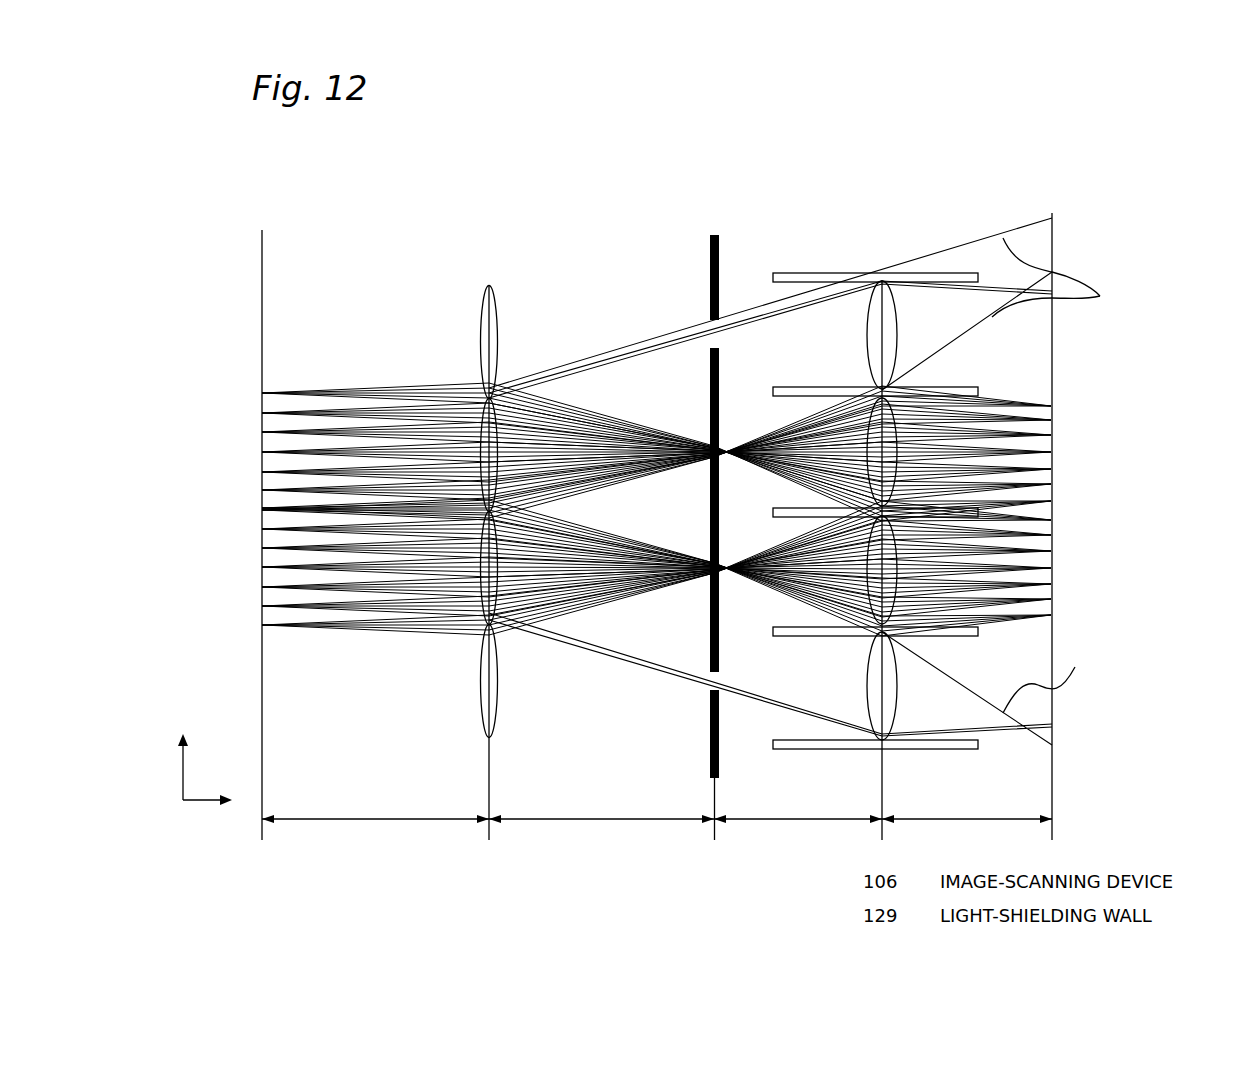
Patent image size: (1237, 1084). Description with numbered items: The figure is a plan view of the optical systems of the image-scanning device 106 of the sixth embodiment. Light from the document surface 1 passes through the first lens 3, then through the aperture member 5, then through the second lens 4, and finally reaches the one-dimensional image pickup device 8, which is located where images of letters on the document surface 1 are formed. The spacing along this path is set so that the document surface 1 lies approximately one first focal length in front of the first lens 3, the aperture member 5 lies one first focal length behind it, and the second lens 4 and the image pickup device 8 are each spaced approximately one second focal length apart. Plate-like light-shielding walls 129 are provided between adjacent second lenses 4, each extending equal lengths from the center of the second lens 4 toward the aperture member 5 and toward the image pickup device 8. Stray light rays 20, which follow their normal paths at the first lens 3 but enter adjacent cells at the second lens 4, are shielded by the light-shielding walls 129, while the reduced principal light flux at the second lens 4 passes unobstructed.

The document surface 1 is at (262, 255).
The first lens 3 is at (489, 287).
The second lens 4 is at (882, 280).
The aperture member 5 is at (714, 238).
The one-dimensional image pickup device 8 is at (1052, 243).
The stray light ray 20 is at (1100, 296).
The image-scanning device 106 is at (641, 200).
The light-shielding wall 129 is at (797, 272).